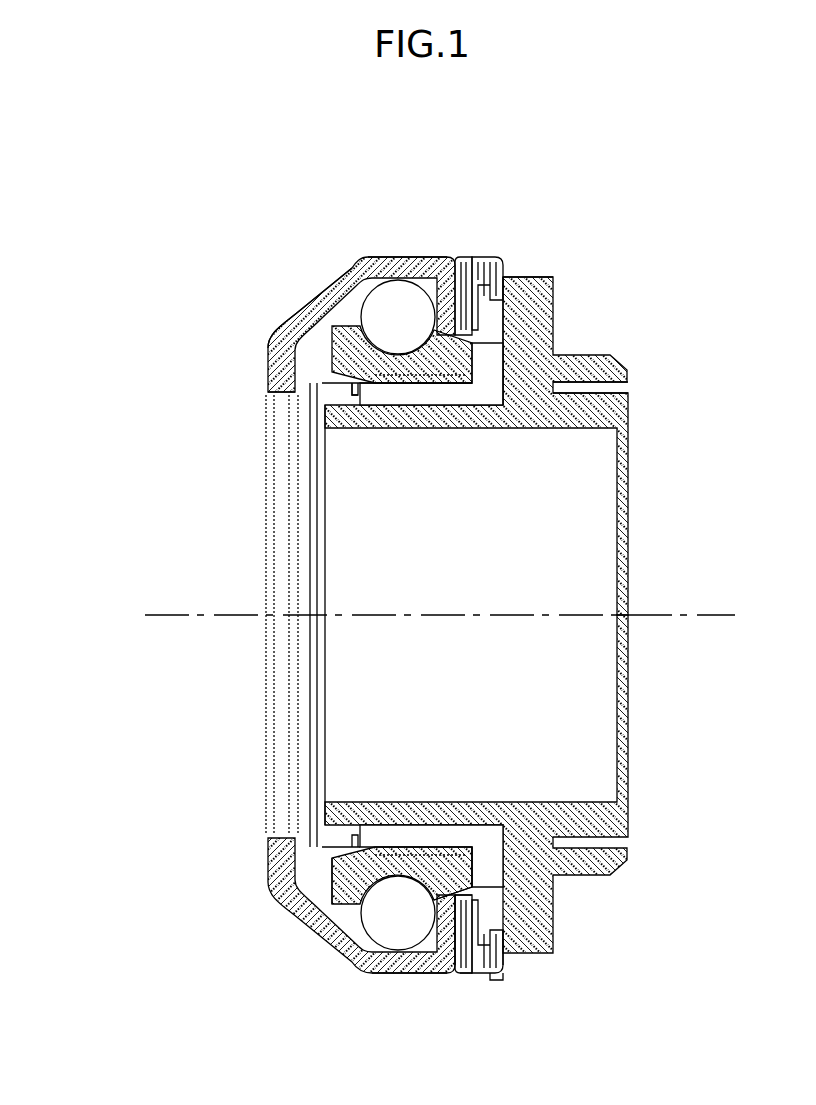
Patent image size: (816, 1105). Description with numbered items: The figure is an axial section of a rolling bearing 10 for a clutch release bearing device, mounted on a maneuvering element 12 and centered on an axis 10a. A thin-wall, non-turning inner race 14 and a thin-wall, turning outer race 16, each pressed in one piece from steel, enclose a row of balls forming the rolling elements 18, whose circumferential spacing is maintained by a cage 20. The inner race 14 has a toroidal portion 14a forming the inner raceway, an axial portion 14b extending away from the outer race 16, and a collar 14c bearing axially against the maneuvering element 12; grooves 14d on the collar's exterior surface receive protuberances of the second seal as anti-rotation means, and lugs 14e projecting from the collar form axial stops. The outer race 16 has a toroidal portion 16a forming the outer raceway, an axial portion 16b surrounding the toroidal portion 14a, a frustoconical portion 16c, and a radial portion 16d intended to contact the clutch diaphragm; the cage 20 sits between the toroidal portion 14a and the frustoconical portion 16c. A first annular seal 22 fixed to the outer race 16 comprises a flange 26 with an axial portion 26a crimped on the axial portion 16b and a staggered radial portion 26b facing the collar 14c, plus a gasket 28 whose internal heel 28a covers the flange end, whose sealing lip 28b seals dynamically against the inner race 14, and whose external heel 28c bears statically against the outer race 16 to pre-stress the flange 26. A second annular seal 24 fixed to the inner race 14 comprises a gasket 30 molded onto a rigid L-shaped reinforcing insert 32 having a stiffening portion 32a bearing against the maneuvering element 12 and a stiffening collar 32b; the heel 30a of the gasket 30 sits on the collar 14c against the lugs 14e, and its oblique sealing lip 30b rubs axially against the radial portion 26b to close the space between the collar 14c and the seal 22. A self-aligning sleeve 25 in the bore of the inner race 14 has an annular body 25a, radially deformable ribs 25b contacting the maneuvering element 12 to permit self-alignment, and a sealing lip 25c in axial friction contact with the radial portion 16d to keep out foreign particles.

The rolling bearing 10 is at (442, 615).
The axis 10a is at (718, 608).
The maneuvering element 12 is at (416, 576).
The inner race 14 is at (416, 576).
The toroidal portion 14a is at (322, 395).
The axial portion 14b is at (573, 387).
The collar 14c is at (500, 325).
The groove 14d is at (508, 288).
The lug 14e is at (484, 262).
The outer race 16 is at (330, 308).
The toroidal portion 16a is at (384, 274).
The axial portion 16b is at (428, 258).
The frustoconical portion 16c is at (312, 302).
The radial portion 16d is at (266, 384).
The rolling elements 18 is at (388, 327).
The cage 20 is at (342, 331).
The first annular seal 22 is at (459, 253).
The second annular seal 24 is at (501, 255).
The self-aligning sleeve 25 is at (453, 615).
The body 25a is at (548, 420).
The ribs 25b is at (430, 393).
The sealing lip 25c is at (347, 389).
The flange 26 is at (370, 935).
The axial portion 26a is at (418, 974).
The radial portion 26b is at (464, 974).
The gasket 28 is at (490, 954).
The internal heel 28a is at (520, 918).
The sealing lip 28b is at (490, 872).
The external heel 28c is at (446, 918).
The gasket 30 is at (413, 978).
The heel 30a is at (460, 960).
The sealing lip 30b is at (482, 975).
The reinforcing insert 32 is at (549, 943).
The stiffening portion 32a is at (500, 945).
The stiffening collar 32b is at (500, 980).